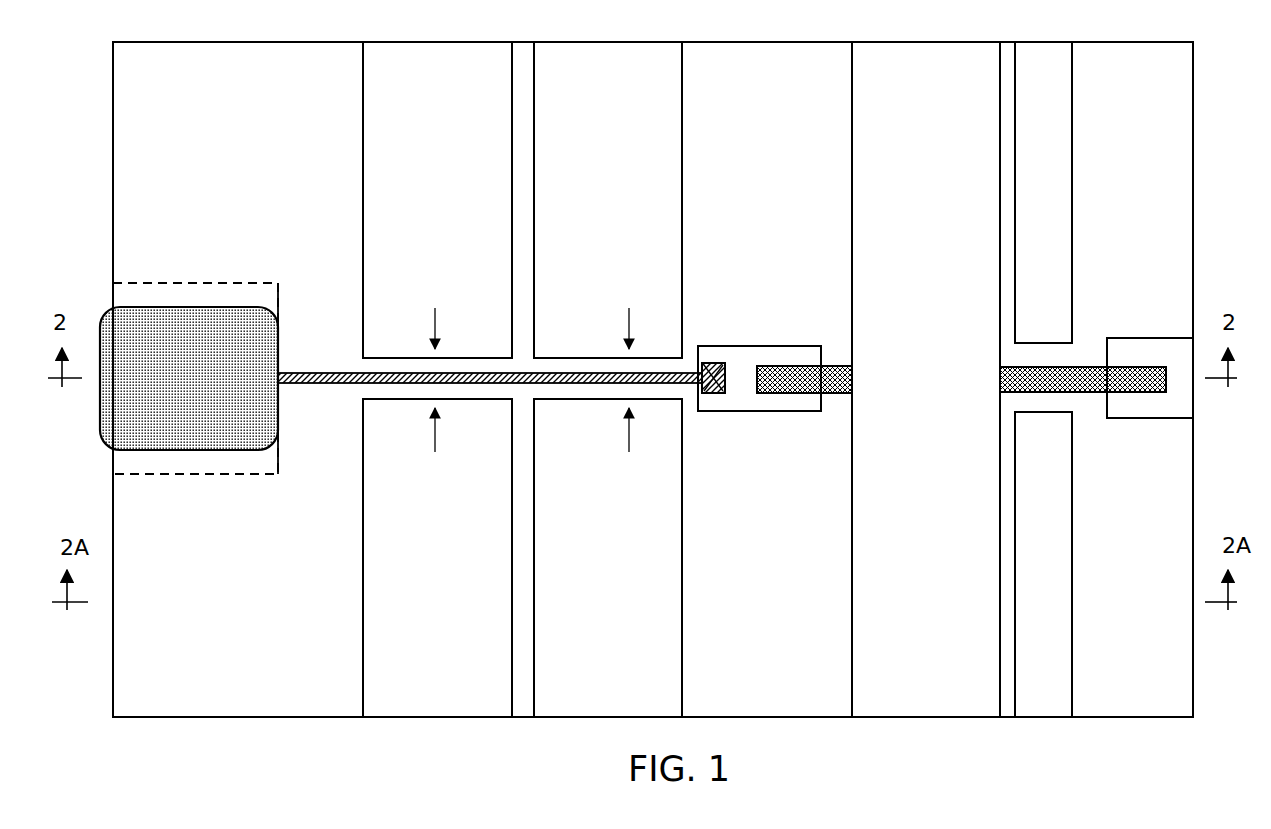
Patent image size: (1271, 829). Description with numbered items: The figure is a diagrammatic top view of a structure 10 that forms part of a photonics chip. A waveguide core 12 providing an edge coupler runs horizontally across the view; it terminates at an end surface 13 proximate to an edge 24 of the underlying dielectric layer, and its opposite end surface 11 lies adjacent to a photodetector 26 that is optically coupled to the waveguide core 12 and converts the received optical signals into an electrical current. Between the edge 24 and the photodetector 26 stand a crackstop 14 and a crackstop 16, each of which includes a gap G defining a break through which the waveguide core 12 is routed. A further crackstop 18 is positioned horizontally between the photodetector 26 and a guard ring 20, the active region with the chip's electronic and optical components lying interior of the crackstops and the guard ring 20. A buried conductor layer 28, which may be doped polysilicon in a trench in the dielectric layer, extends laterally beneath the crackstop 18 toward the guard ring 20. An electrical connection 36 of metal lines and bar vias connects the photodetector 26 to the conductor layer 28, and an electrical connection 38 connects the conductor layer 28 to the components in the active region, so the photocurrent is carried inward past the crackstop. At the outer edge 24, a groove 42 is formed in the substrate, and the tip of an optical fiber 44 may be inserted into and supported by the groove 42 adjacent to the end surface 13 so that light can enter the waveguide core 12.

The structure 10 is at (207, 101).
The end surface 11 is at (715, 390).
The waveguide core 12 is at (540, 378).
The end surface 13 is at (278, 377).
The crackstop 14 is at (393, 162).
The crackstop 16 is at (650, 128).
The crackstop 18 is at (887, 590).
The guard ring 20 is at (1045, 130).
The edge 24 is at (268, 297).
The photodetector 26 is at (717, 377).
The conductor layer 28 is at (842, 387).
The electrical connection 36 is at (773, 348).
The electrical connection 38 is at (1163, 420).
The groove 42 is at (142, 475).
The optical fiber 44 is at (175, 407).
The gap G is at (531, 395).